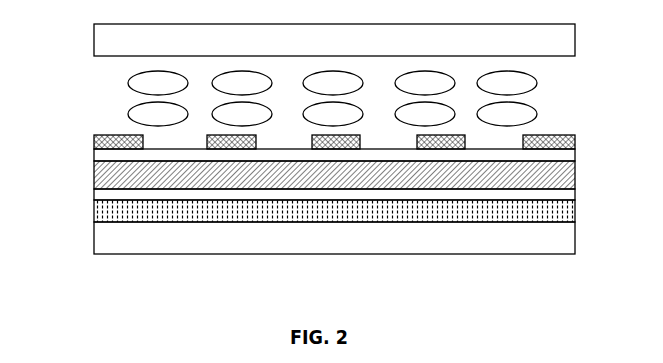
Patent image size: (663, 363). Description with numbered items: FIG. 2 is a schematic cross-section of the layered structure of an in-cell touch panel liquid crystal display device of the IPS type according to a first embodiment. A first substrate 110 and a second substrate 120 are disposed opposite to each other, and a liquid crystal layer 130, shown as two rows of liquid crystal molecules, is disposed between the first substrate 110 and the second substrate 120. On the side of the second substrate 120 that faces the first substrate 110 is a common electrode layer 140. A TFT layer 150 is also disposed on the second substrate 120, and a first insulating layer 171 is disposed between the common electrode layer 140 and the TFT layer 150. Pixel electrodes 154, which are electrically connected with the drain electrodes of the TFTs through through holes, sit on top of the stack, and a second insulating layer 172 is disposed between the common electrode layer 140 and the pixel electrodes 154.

The first substrate 110 is at (96, 40).
The liquid crystal layer 130 is at (133, 82).
The pixel electrode 154 is at (98, 139).
The second insulating layer 172 is at (571, 155).
The TFT layer 150 is at (98, 175).
The first insulating layer 171 is at (571, 192).
The common electrode layer 140 is at (101, 211).
The second substrate 120 is at (101, 233).